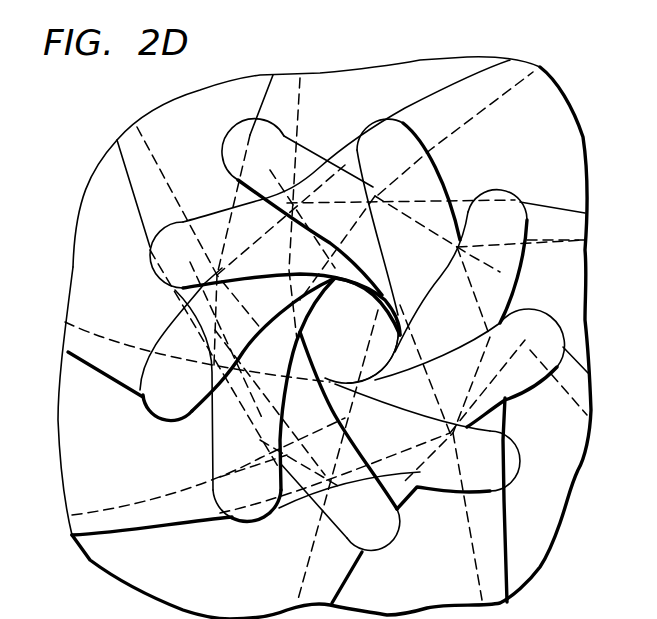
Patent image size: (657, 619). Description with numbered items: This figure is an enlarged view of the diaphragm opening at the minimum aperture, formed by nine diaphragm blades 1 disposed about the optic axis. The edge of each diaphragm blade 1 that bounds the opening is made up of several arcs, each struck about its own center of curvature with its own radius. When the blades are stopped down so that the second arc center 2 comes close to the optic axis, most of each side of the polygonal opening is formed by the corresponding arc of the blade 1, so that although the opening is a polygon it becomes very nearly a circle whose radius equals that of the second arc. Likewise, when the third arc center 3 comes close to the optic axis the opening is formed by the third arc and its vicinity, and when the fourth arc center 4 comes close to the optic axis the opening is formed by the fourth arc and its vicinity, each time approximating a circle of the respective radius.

The diaphragm blade 1 is at (343, 100).
The profile arc of radius r2 about center O2 2 is at (363, 283).
The profile arc of radius r3 about center O3 3 is at (342, 252).
The profile arc of radius r4 about center O(O4) 4 is at (383, 307).